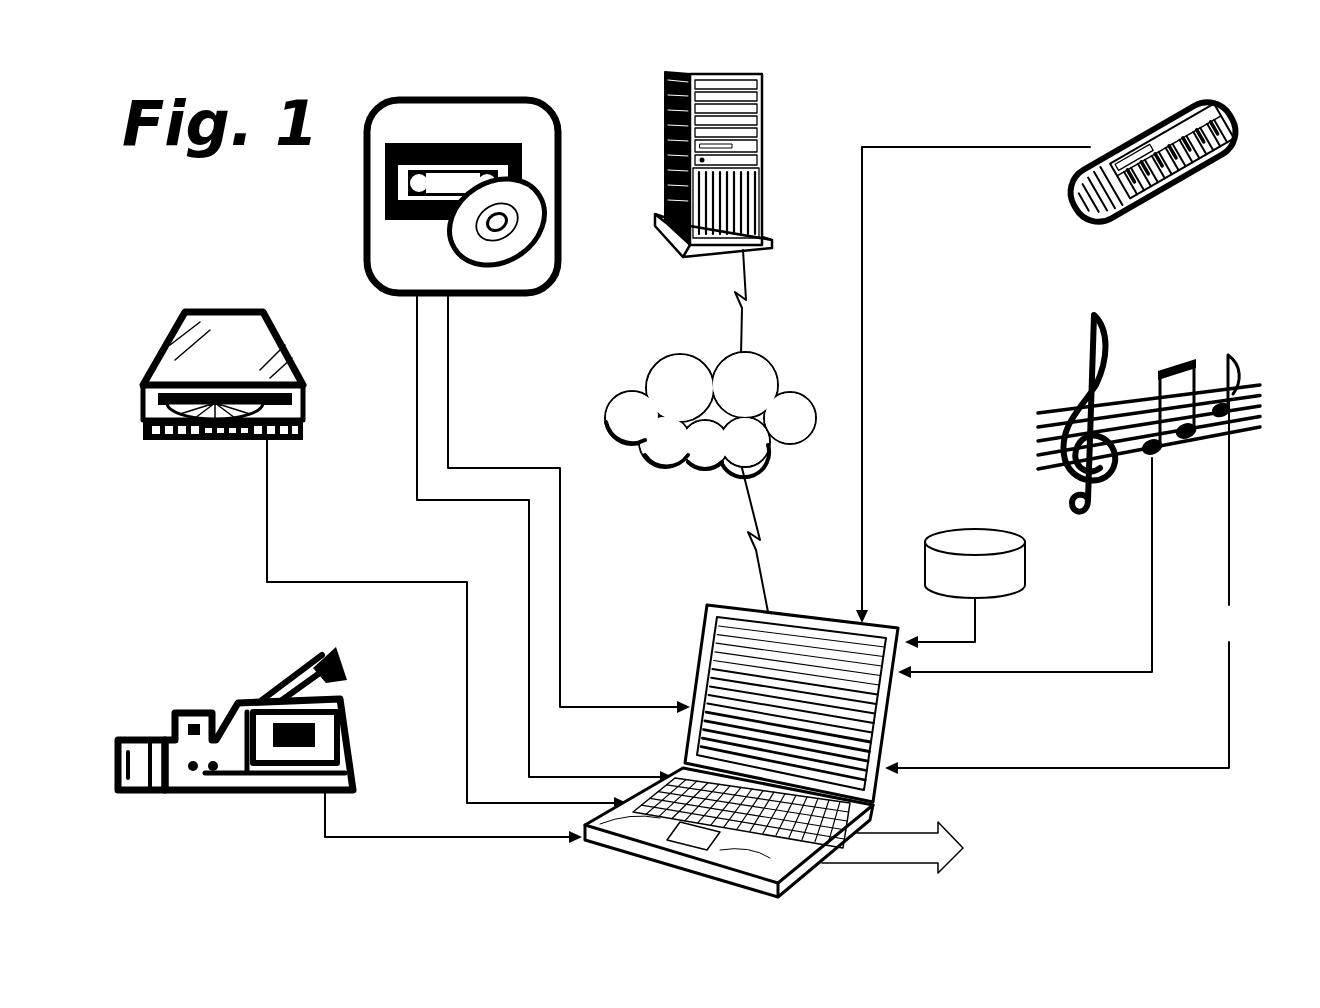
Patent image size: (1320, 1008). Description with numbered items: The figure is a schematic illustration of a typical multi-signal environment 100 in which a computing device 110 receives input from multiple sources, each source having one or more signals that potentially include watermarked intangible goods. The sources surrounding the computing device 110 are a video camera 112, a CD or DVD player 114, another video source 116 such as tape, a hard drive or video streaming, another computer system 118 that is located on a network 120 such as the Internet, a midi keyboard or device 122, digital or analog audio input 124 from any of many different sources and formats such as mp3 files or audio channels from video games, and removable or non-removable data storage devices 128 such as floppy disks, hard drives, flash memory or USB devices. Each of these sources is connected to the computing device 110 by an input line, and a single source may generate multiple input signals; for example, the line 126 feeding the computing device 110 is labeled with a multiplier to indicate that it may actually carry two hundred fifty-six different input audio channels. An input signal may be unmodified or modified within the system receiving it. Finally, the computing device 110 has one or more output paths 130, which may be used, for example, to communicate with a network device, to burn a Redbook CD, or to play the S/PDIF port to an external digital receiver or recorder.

The multi-signal environment 100 is at (242, 240).
The computing device 110 is at (697, 625).
The video camera 112 is at (265, 700).
The CD or DVD player 114 is at (303, 416).
The other video source 116 is at (555, 283).
The another computer system 118 is at (760, 101).
The network 120 is at (757, 366).
The midi keyboard or device 122 is at (1173, 178).
The digital or analog audio input 124 is at (1038, 435).
The line 126 is at (1083, 772).
The removable or non-removable data storage devices 128 is at (975, 530).
The output paths 130 is at (945, 832).